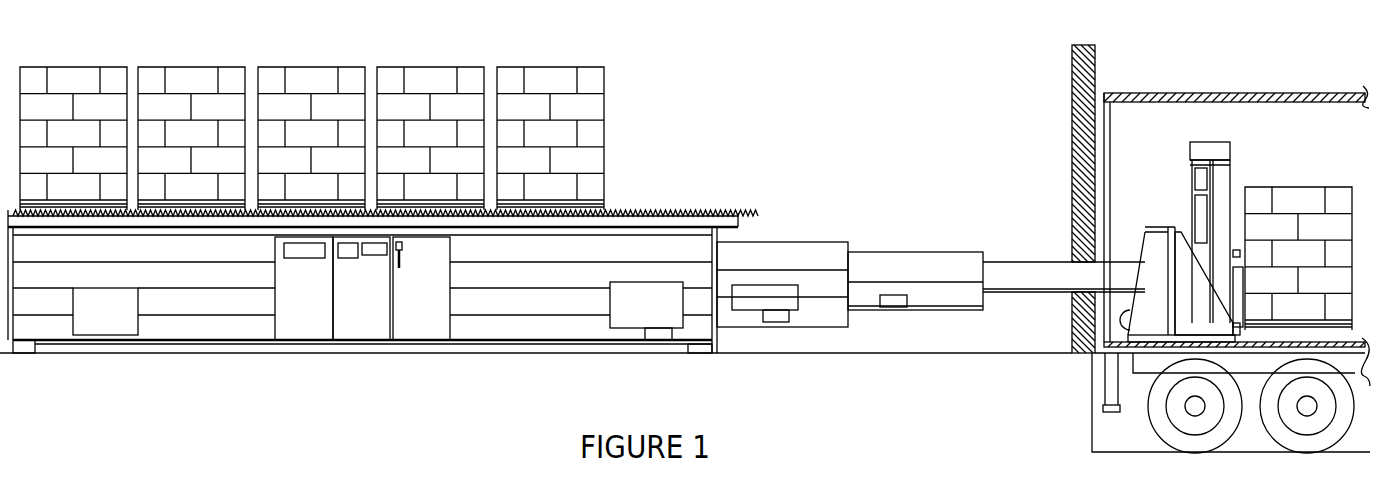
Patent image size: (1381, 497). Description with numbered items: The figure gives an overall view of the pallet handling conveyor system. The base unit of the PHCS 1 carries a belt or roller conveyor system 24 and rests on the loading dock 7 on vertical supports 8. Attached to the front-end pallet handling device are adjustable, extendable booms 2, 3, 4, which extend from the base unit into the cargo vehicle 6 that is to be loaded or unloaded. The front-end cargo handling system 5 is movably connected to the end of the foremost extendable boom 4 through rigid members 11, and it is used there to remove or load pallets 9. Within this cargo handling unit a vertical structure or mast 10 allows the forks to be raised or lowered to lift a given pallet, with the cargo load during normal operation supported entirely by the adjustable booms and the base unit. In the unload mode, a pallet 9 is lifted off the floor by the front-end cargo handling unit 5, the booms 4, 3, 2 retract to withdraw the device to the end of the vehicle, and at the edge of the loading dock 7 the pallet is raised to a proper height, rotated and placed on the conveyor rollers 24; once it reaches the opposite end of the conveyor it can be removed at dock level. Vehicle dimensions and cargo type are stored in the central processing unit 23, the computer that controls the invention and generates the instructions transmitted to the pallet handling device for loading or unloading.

The base unit of the PHCS 1 is at (558, 325).
The adjustable boom 2 is at (808, 308).
The adjustable boom 3 is at (862, 292).
The foremost extendable boom 4 is at (1020, 282).
The front-end cargo handling system 5 is at (1172, 217).
The cargo vehicle 6 is at (1145, 93).
The loading dock 7 is at (1000, 355).
The vertical supports 8 is at (700, 347).
The pallets 9 is at (573, 107).
The mast 10 is at (1220, 175).
The rigid members 11 is at (1148, 252).
The central processing unit 23 is at (363, 322).
The roller conveyor system 24 is at (680, 213).